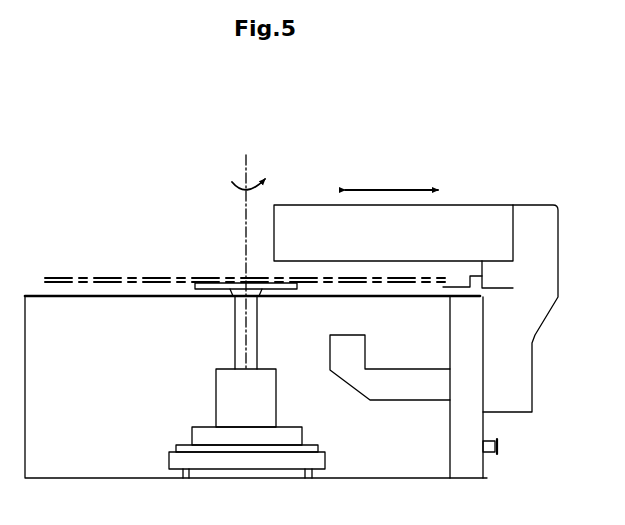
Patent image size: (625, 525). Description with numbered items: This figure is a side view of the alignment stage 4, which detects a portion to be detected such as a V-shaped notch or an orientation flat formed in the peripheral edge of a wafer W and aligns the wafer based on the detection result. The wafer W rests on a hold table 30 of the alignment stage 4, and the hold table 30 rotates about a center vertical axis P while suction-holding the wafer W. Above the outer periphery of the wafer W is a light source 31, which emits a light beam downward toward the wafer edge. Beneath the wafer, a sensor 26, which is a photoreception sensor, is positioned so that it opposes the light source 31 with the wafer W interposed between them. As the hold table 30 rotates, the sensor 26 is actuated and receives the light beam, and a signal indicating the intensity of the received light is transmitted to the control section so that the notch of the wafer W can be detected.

The alignment stage 4 is at (198, 115).
The sensor 26 is at (380, 402).
The hold table 30 is at (210, 288).
The light source 31 is at (299, 205).
The wafer W is at (213, 275).
The center vertical axis P is at (248, 241).